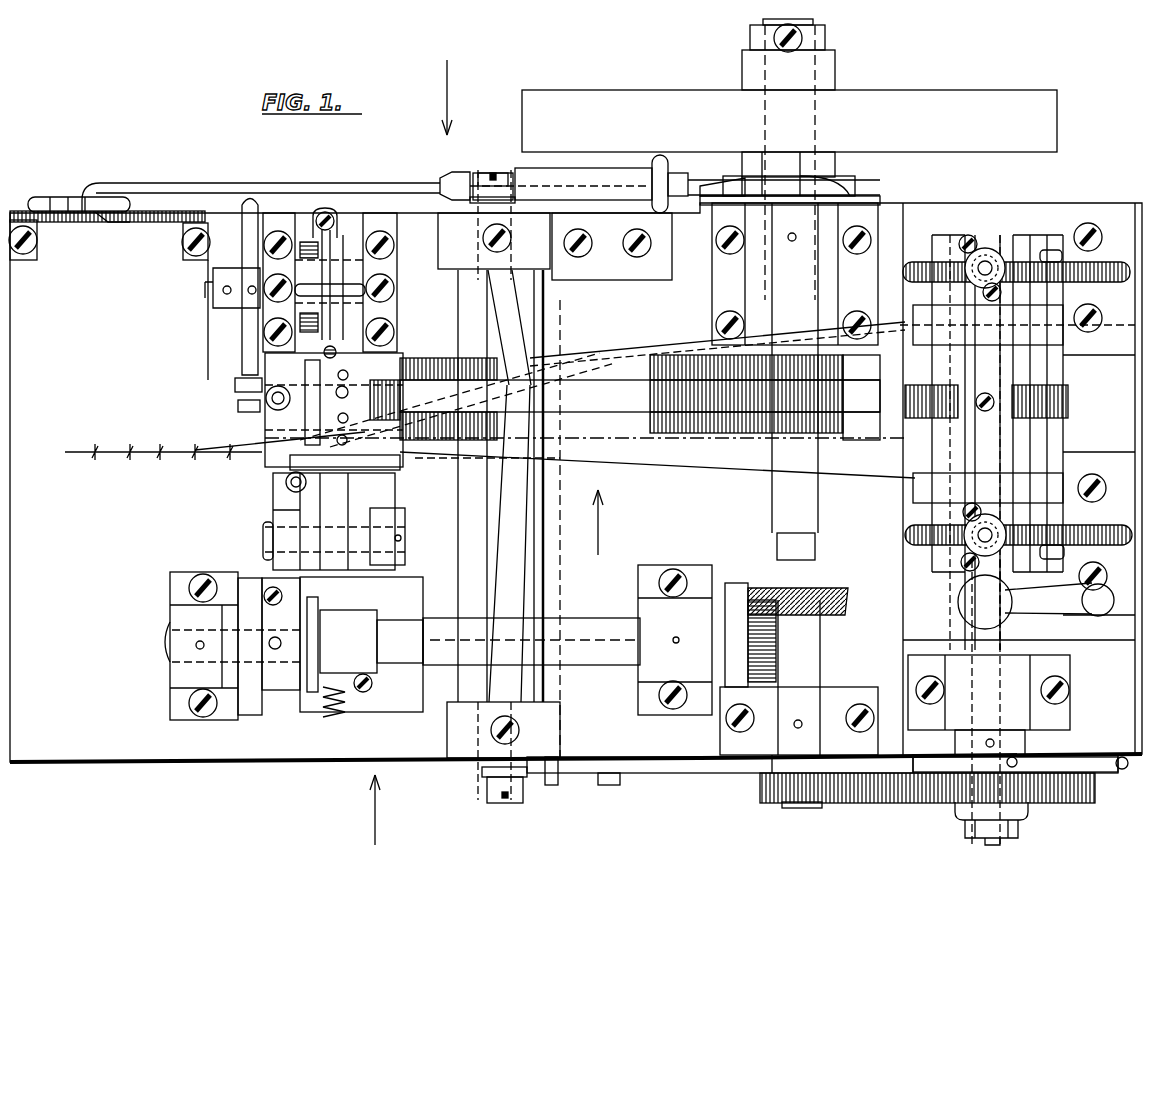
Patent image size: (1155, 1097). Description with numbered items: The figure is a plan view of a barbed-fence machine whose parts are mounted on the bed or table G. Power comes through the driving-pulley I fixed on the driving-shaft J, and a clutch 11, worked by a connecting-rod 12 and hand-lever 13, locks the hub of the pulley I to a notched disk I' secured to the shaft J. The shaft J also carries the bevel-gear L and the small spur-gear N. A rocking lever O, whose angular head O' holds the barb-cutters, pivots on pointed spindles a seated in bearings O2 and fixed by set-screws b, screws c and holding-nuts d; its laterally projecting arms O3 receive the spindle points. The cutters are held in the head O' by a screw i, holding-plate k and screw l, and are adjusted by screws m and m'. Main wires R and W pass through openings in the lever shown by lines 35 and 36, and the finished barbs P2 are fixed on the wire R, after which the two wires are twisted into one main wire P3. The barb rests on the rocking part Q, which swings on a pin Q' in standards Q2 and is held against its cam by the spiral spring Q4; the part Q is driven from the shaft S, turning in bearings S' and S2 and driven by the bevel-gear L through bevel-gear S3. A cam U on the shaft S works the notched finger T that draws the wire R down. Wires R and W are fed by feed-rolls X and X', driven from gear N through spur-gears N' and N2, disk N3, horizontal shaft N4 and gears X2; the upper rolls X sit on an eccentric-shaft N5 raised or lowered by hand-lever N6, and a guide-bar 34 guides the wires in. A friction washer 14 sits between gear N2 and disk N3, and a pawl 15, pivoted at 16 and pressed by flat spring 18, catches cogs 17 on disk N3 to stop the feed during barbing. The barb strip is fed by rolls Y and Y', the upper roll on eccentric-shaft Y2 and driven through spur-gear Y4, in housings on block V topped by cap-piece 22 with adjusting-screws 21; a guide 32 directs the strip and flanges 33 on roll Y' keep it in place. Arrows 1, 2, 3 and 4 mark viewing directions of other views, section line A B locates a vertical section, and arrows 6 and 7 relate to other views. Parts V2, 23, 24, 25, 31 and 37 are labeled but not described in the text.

The bed or table G is at (575, 482).
The driving-wheel or pulley I is at (789, 159).
The notched wheel or disk I' is at (790, 185).
The driving-shaft J is at (795, 514).
The rocking lever O is at (585, 424).
The head of rocking lever O' is at (435, 345).
The bearings O2 is at (503, 539).
The laterally-projecting arms O3 is at (520, 322).
The main wire W is at (826, 331).
The section line point B is at (770, 400).
The main wire R is at (758, 461).
The upper feed-rolls X is at (1019, 479).
The lower feed-rolls X' is at (1017, 331).
The spur-gears X2 is at (1068, 402).
The spur-gear N is at (909, 788).
The spur-gear N' is at (854, 815).
The spur-gear N2 is at (915, 815).
The disk N3 is at (1040, 758).
The horizontal shaft N4 is at (1033, 843).
The eccentric-shaft N5 is at (1018, 566).
The hand-lever N6 is at (1059, 599).
The bevel-gear L is at (848, 598).
The driving-shaft S is at (215, 646).
The bearing S' is at (531, 641).
The bearing S2 is at (650, 688).
The bevel-gear S3 is at (799, 669).
The cam U is at (300, 698).
The rocking part Q is at (335, 538).
The pin Q' is at (332, 536).
The standards Q2 is at (275, 520).
The spiral spring Q4 is at (338, 712).
The notched finger T is at (285, 470).
The finished barb P2 is at (163, 442).
The main wire P3 is at (109, 435).
The section line point A is at (280, 436).
The block V is at (334, 411).
The stop V2 is at (237, 373).
The upper feed-roll Y is at (221, 290).
The lower feed-roll Y' is at (305, 353).
The eccentric-shaft Y2 is at (320, 309).
The spur-gear Y4 is at (223, 325).
The pointed shafts or spindles a is at (480, 234).
The set-screws b is at (512, 240).
The screws c is at (492, 173).
The holding-nuts d is at (513, 190).
The holding-plate k is at (335, 392).
The screw i is at (320, 407).
The screw m is at (344, 368).
The screw m' is at (348, 423).
The screw l is at (342, 337).
The arrow 1 is at (379, 810).
The arrow 2 is at (452, 97).
The arrow 3 is at (278, 392).
The arrow 4 is at (602, 522).
The arrow 6 is at (243, 403).
The arrow 7 is at (258, 416).
The clutch 11 is at (720, 185).
The connecting-rod 12 is at (481, 184).
The hand-lever 13 is at (62, 197).
The frictional washer 14 is at (1072, 768).
The pawl or lever 15 is at (842, 764).
The pivot 16 is at (609, 789).
The cogs 17 is at (1132, 766).
The flat spring 18 is at (822, 771).
The adjustable screws 21 is at (330, 282).
The cap-piece 22 is at (325, 311).
The pin 23 is at (237, 633).
The pin 24 is at (202, 675).
The block 25 is at (269, 646).
The pin 31 is at (329, 340).
The guide 32 is at (324, 216).
The flanges 33 is at (330, 258).
The guide-bar 34 is at (1052, 380).
The opening lines 35 is at (487, 543).
The opening lines 36 is at (457, 358).
The pin 37 is at (802, 782).